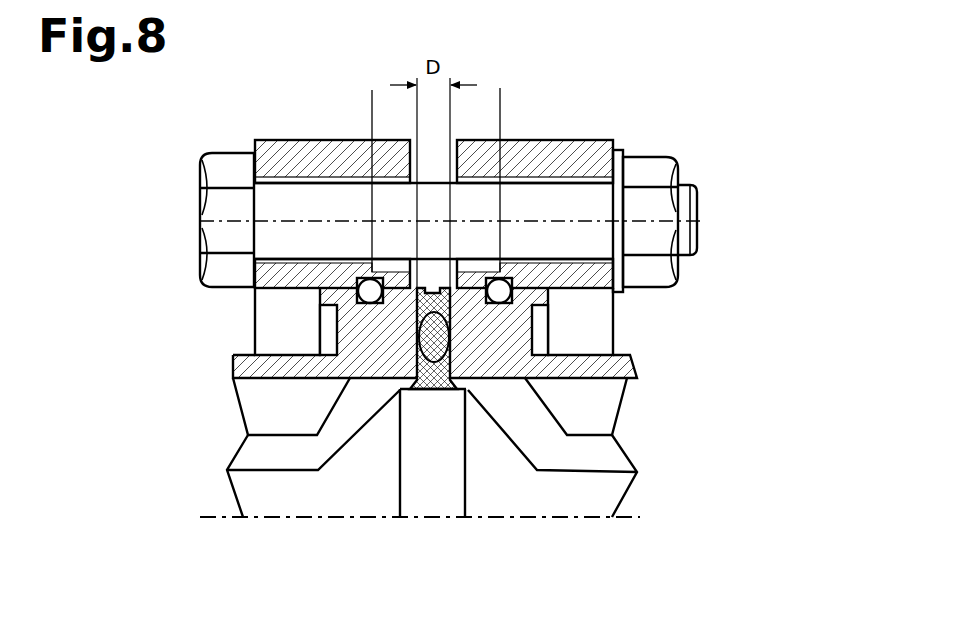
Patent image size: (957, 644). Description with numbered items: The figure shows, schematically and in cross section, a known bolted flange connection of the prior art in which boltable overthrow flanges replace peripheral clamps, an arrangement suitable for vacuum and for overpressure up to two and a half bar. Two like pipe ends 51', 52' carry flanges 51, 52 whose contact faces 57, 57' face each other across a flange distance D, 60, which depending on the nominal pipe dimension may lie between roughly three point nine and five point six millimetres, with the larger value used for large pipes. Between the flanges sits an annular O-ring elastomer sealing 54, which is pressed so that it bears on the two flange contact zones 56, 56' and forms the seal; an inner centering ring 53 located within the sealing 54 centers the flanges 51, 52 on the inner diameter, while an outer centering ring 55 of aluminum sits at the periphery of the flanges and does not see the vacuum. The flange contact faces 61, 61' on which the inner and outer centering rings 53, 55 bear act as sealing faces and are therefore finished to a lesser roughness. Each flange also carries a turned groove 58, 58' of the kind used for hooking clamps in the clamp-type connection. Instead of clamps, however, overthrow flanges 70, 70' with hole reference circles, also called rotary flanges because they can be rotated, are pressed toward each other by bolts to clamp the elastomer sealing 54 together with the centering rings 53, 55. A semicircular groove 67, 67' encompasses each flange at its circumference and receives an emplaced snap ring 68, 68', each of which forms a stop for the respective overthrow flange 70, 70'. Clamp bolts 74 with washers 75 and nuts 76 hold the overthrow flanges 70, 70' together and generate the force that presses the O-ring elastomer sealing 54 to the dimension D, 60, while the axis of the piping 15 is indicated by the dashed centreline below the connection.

The pipe axis line 15 is at (581, 518).
The flange 51 is at (212, 413).
The pipe end 51' is at (246, 367).
The flange 52 is at (641, 413).
The pipe end 52' is at (605, 367).
The inner centering ring 53 is at (428, 378).
The elastomer sealing 54 is at (433, 342).
The outer centering ring 55 is at (437, 303).
The flange contact zone 56 is at (246, 331).
The flange contact zone 56' is at (605, 331).
The contact face 57 is at (237, 453).
The contact face 57' is at (614, 453).
The turned groove 58 is at (206, 330).
The turned groove 58' is at (646, 330).
The flange distance D 60 is at (420, 65).
The flange contact face 61 is at (229, 247).
The flange contact face 61' is at (623, 247).
The semicircular groove 67 is at (242, 275).
The semicircular groove 67' is at (608, 275).
The snap ring 68 is at (347, 175).
The snap ring 68' is at (527, 174).
The overthrow flange 70 is at (332, 129).
The overthrow flange 70' is at (541, 129).
The clamp bolt 74 is at (233, 172).
The washer 75 is at (620, 158).
The nut 76 is at (645, 167).